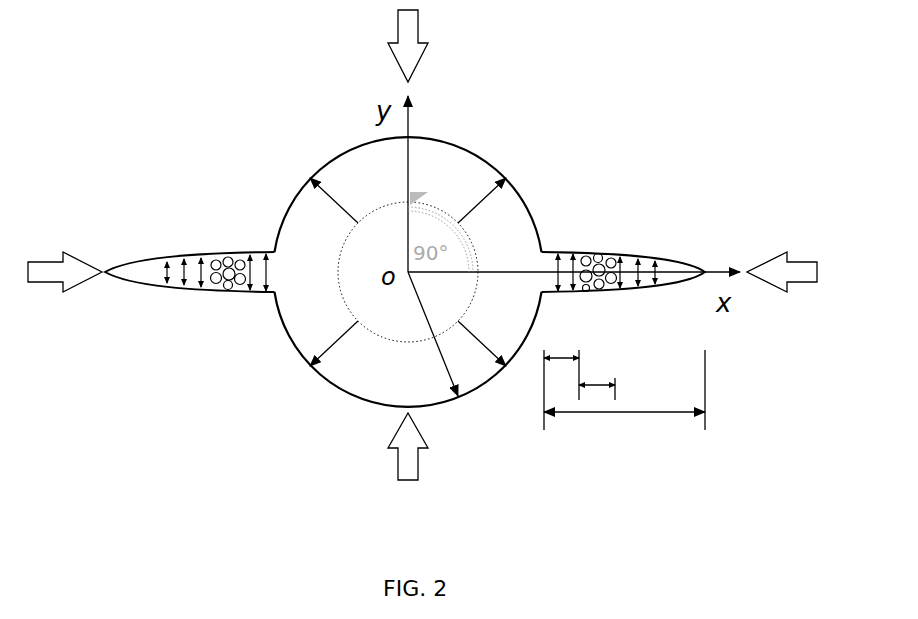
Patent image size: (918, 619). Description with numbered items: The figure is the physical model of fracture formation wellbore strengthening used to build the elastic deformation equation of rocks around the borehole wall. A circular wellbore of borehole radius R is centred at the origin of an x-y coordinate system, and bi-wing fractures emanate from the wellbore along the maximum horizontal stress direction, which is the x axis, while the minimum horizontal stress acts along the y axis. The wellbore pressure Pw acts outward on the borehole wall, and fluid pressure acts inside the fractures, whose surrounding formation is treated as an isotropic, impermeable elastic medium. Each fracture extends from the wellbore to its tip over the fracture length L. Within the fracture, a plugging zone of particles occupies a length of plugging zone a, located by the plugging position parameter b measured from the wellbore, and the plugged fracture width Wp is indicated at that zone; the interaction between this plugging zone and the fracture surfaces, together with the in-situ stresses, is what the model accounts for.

The borehole radius R is at (427, 334).
The wellbore pressure Pw is at (405, 272).
The proppant pack width Wp is at (598, 248).
The length of plugging zone a is at (561, 342).
The plugging position parameter b is at (597, 369).
The fracture length L is at (624, 397).